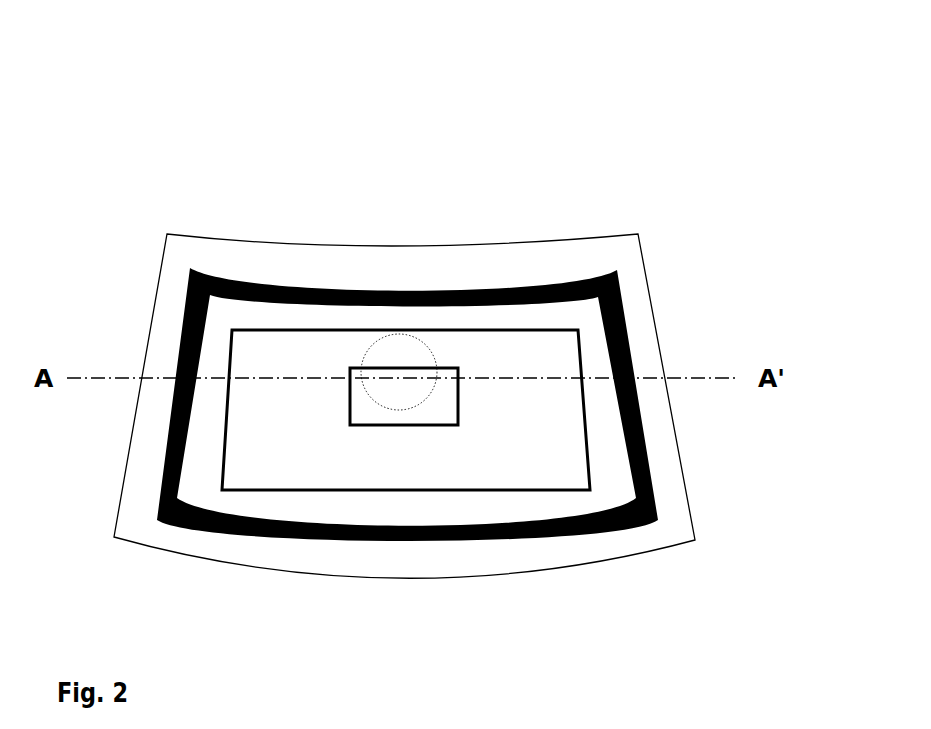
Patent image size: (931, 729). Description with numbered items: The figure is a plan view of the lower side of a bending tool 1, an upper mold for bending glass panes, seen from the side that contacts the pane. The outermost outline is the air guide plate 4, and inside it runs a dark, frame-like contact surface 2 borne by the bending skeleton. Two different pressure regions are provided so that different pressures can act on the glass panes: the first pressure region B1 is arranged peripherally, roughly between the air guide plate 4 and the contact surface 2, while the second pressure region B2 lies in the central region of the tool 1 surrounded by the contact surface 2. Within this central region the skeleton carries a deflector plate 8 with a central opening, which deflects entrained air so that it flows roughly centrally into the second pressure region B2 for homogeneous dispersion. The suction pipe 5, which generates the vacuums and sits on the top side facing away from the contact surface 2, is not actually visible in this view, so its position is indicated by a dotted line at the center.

The bending tool 1 is at (697, 145).
The contact surface 2 is at (403, 292).
The air guide plate 4 is at (367, 245).
The suction pipe 5 is at (410, 347).
The deflector plate 8 is at (490, 490).
The first pressure region B1 is at (477, 270).
The second pressure region B2 is at (388, 512).